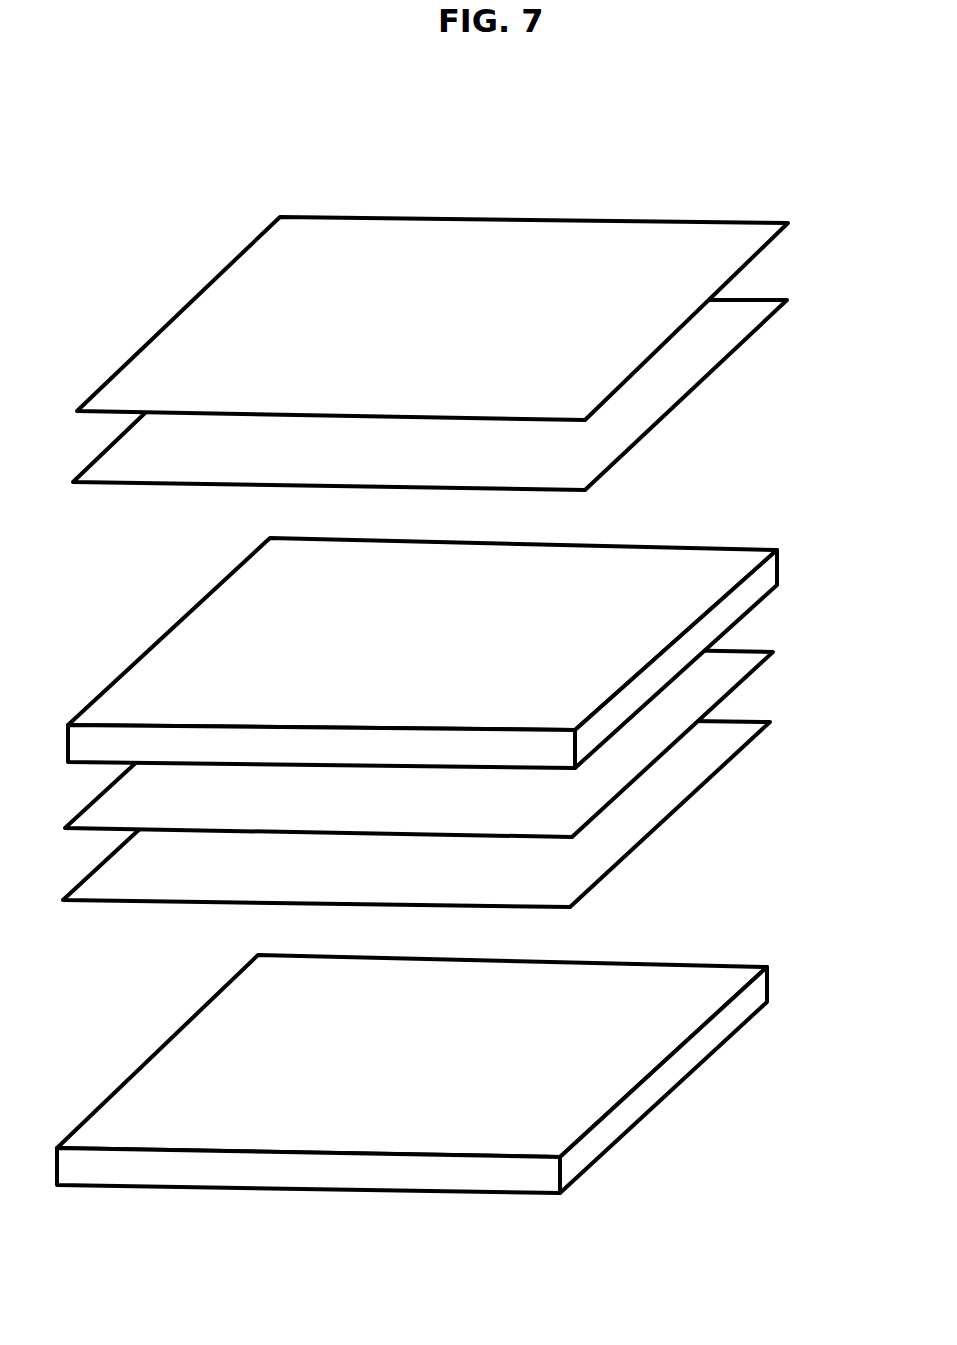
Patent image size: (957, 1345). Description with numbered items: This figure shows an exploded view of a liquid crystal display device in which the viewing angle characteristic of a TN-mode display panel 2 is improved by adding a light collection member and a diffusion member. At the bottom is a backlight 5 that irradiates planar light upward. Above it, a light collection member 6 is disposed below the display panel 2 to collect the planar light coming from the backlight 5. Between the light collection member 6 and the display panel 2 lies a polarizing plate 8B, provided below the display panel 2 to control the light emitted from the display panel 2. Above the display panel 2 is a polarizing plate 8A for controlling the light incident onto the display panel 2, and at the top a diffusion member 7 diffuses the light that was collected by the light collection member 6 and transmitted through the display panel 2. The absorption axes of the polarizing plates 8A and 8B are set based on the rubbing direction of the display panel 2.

The diffusion member 7 is at (745, 251).
The polarizing plate 8A is at (740, 330).
The display panel 2 is at (777, 568).
The polarizing plate 8B is at (737, 673).
The light collection member 6 is at (717, 757).
The backlight 5 is at (767, 982).